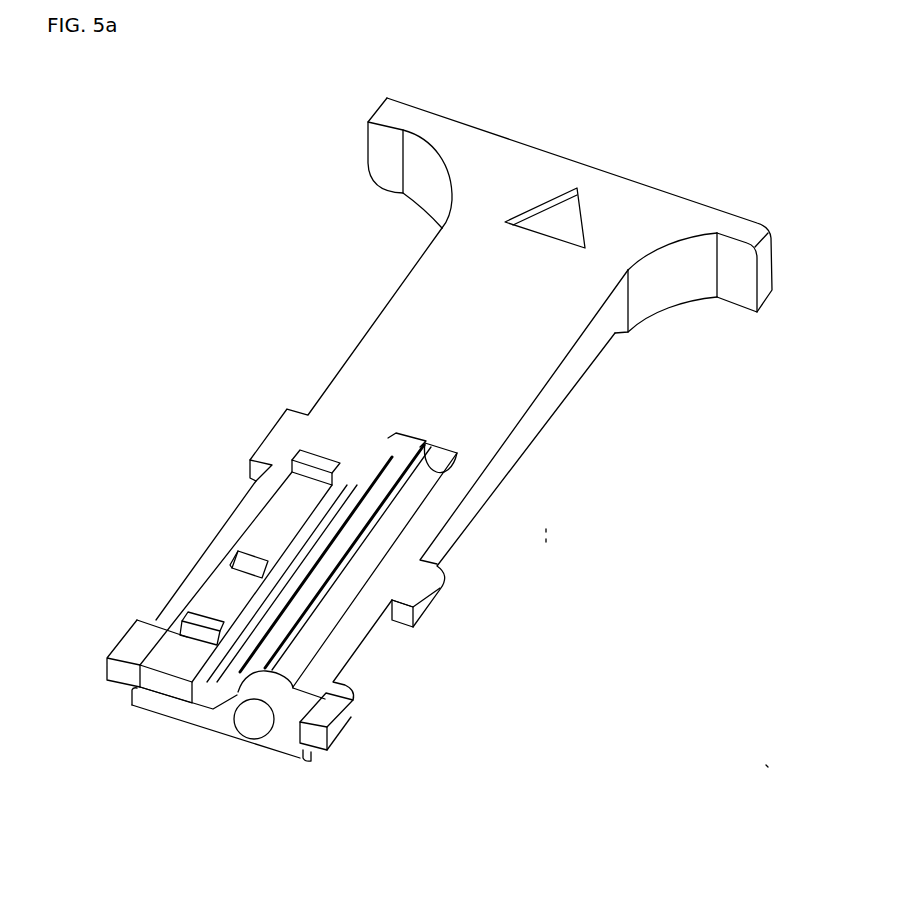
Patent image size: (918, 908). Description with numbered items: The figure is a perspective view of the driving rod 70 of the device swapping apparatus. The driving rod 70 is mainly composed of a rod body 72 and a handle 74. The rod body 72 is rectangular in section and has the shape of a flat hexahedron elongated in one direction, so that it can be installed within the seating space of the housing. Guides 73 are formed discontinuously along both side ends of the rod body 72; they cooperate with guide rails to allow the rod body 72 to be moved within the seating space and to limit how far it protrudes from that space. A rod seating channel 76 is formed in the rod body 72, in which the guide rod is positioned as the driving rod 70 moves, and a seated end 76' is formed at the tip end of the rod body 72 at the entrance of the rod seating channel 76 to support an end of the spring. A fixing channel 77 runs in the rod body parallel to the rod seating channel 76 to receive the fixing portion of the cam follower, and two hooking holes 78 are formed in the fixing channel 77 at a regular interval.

The driving rod 70 is at (598, 408).
The rod body 72 is at (478, 508).
The guides 73 is at (285, 438).
The handle 74 is at (745, 228).
The rod seating channel 76 is at (348, 567).
The seated end 76' is at (261, 730).
The fixing channel 77 is at (218, 603).
The hooking holes 78 is at (238, 559).